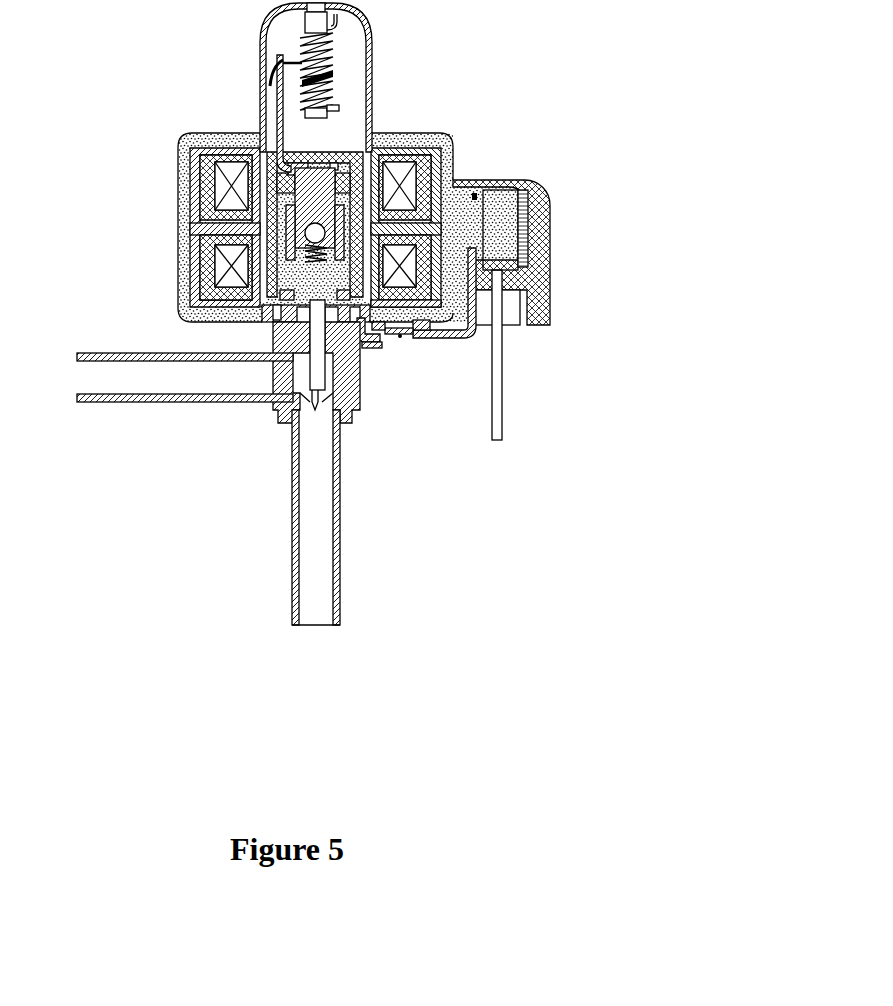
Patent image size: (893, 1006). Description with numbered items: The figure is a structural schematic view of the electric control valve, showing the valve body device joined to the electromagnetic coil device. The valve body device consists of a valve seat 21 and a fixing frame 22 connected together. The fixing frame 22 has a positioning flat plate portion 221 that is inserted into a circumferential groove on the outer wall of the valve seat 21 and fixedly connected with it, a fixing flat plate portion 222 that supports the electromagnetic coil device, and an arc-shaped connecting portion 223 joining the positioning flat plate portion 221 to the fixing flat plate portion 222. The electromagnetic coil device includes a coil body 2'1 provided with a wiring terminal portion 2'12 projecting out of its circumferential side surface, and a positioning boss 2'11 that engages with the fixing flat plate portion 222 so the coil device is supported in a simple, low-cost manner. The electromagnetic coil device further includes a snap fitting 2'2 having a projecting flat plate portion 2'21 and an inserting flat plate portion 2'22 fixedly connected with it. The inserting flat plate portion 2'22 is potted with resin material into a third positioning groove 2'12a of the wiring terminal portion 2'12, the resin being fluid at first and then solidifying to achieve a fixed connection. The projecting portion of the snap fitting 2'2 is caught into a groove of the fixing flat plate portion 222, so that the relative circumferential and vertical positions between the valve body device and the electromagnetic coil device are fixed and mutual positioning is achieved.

The coil body 2'1 is at (246, 164).
The valve seat 21 is at (337, 378).
The wiring terminal portion 2'12 is at (578, 291).
The third positioning groove 2'12a is at (600, 230).
The positioning boss 2'11 is at (555, 287).
The inserting flat plate portion 2'22 is at (537, 316).
The projecting flat plate portion 2'21 is at (544, 359).
The snap fitting 2'2 is at (572, 343).
The fixing flat plate portion 222 is at (378, 327).
The arc-shaped connecting portion 223 is at (372, 340).
The positioning flat plate portion 221 is at (366, 348).
The fixing frame 22 is at (559, 415).